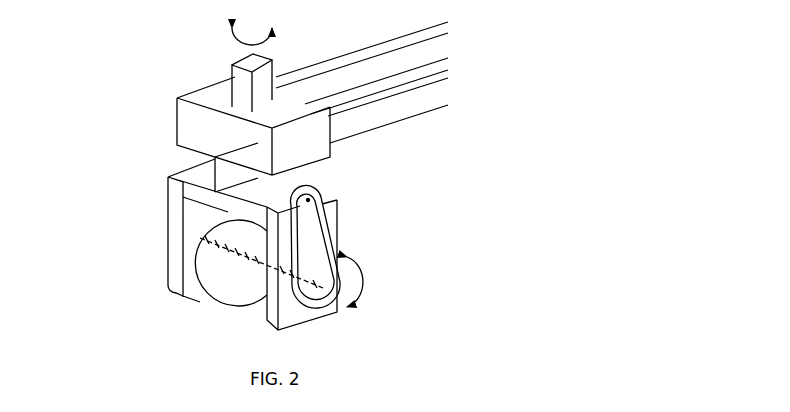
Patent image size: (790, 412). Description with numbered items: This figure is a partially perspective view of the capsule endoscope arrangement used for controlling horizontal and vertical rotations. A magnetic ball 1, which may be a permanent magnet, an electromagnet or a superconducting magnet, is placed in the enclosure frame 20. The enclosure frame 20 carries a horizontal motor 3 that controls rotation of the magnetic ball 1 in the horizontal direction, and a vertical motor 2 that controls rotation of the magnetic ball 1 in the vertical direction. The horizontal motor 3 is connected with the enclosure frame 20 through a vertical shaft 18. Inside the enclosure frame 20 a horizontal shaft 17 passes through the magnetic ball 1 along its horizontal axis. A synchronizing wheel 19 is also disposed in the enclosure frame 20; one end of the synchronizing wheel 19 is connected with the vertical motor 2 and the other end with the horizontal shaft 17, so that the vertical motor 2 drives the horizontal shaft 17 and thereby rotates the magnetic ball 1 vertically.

The magnetic ball 1 is at (241, 281).
The vertical motor 2 is at (272, 195).
The horizontal motor 3 is at (248, 82).
The horizontal shaft 17 is at (243, 255).
The vertical shaft 18 is at (225, 174).
The synchronizing wheel 19 is at (310, 210).
The enclosure frame 20 is at (300, 313).